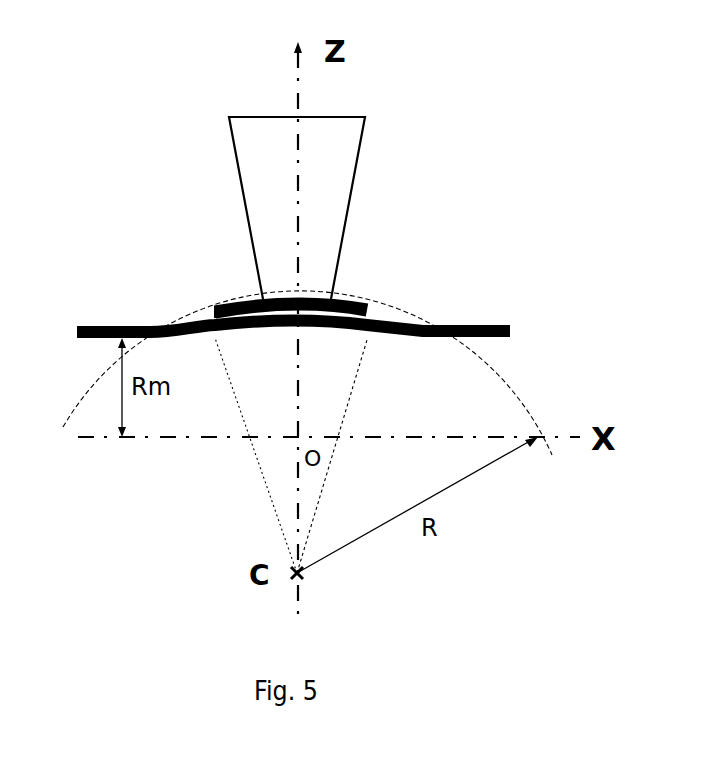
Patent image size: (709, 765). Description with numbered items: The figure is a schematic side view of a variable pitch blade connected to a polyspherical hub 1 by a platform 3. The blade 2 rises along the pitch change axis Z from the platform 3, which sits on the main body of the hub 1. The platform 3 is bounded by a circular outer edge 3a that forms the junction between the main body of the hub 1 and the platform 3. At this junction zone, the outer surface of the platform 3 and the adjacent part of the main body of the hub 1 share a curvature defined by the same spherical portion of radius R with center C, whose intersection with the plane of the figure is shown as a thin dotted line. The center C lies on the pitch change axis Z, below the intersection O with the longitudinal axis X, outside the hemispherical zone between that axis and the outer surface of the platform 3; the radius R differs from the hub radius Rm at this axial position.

The hub 1 is at (507, 368).
The tool / beam 2 is at (318, 152).
The platform 3 is at (353, 302).
The circular outer edge 3a is at (213, 308).